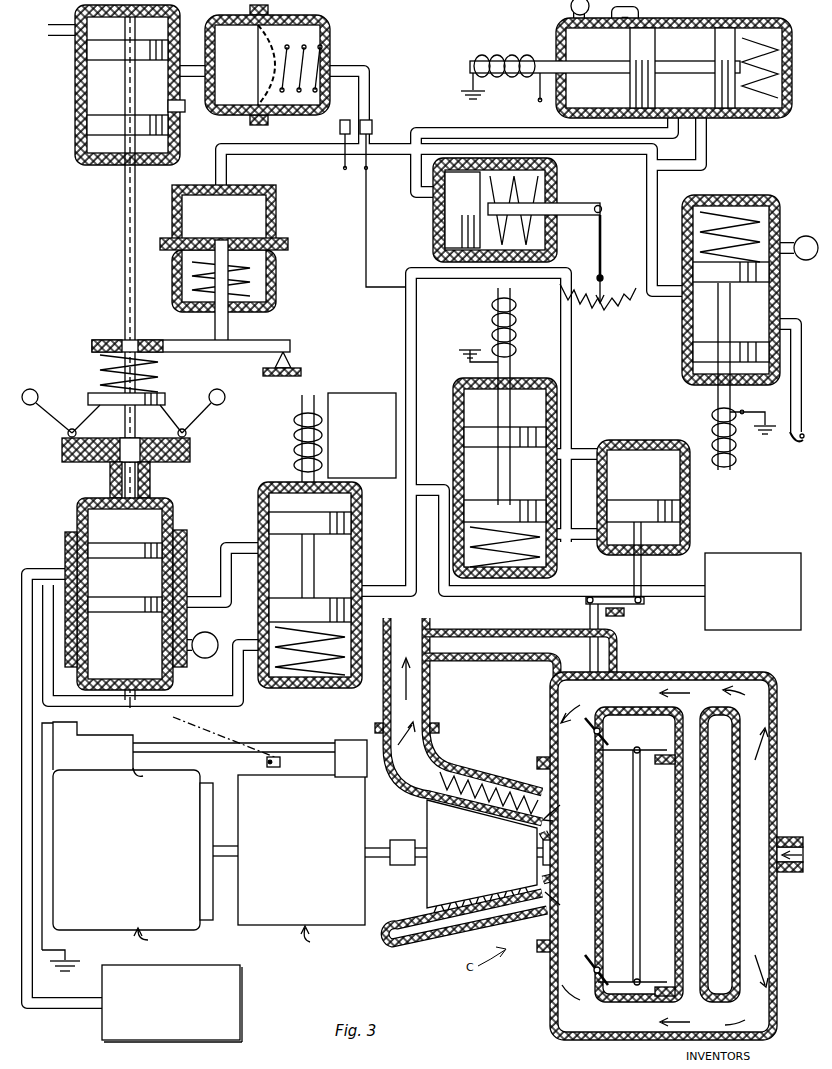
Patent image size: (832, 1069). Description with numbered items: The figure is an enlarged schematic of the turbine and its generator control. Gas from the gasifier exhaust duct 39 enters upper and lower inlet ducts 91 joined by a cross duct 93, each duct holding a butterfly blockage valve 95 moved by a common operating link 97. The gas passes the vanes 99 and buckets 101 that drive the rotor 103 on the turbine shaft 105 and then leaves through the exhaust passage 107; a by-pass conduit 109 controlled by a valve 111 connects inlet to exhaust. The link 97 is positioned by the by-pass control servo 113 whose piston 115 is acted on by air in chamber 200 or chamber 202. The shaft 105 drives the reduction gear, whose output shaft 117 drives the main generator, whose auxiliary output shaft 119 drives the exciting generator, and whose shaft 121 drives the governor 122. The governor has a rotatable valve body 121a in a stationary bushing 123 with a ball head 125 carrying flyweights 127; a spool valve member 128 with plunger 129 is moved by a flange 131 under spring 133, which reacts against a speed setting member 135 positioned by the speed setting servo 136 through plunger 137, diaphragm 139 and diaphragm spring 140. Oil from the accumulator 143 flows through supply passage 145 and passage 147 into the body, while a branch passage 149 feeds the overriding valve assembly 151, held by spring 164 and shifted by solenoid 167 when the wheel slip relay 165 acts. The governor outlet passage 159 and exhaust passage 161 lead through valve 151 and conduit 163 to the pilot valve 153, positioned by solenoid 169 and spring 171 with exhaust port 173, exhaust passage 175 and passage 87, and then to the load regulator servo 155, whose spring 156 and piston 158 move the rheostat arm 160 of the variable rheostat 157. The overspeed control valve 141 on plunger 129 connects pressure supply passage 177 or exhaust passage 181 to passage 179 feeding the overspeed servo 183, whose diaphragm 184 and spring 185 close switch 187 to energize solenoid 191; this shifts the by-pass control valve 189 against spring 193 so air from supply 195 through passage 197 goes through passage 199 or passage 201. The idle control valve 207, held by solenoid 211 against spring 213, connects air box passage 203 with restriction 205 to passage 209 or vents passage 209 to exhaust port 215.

The gasifier exhaust duct 39 is at (790, 868).
The passage 87 is at (629, 30).
The inlet ducts 91 is at (695, 688).
The cross duct 93 is at (581, 841).
The blockage valves 95 is at (575, 728).
The operating link 97 is at (638, 832).
The vanes 99 is at (500, 780).
The buckets 101 is at (470, 806).
The rotor 103 is at (440, 880).
The turbine shaft 105 is at (380, 840).
The exhaust passage 107 is at (416, 704).
The by-pass conduit 109 is at (535, 645).
The by-pass valve 111 is at (594, 680).
The by-pass control servo 113 is at (686, 514).
The piston 115 is at (650, 500).
The output shaft 117 is at (228, 852).
The auxiliary output shaft 119 is at (205, 752).
The governor drive shaft 121 is at (138, 690).
The valve body 121a is at (70, 512).
The turbine governor 122 is at (182, 510).
The bushing 123 is at (186, 545).
The ball head 125 is at (192, 458).
The centrifugal flyweights 127 is at (196, 428).
The spool valve member 128 is at (130, 572).
The operating plunger 129 is at (124, 295).
The flange 131 is at (166, 394).
The spring 133 is at (98, 368).
The speed setting member 135 is at (140, 340).
The speed setting servo 136 is at (278, 278).
The plunger 137 is at (230, 334).
The diaphragm 139 is at (262, 222).
The speed setting diaphragm spring 140 is at (278, 240).
The overspeed control valve assembly 141 is at (72, 128).
The accumulator 143 is at (228, 1036).
The governor supply passage 145 is at (46, 1008).
The passage 147 is at (32, 566).
The branch passage 149 is at (243, 700).
The overriding valve assembly 151 is at (280, 494).
The pilot valve 153 is at (730, 117).
The load regulator servo 155 is at (562, 188).
The load regulator servo spring 156 is at (490, 170).
The variable rheostat 157 is at (622, 310).
The load regulator servo piston 158 is at (458, 216).
The governor outlet passage 159 is at (222, 604).
The rheostat movable arm 160 is at (620, 259).
The exhaust passage 161 is at (194, 640).
The conduit 163 is at (680, 172).
The spring 164 is at (322, 680).
The relay 165 is at (336, 392).
The solenoid 167 is at (678, 132).
The solenoid 169 is at (503, 60).
The spring 171 is at (780, 108).
The exhaust port 173 is at (790, 58).
The exhaust passage 175 is at (570, 8).
The pressure supply passage 177 is at (183, 110).
The overspeed switch servo supply passage 179 is at (212, 60).
The exhaust passage 181 is at (60, 35).
The overspeed servo 183 is at (332, 30).
The diaphragm 184 is at (272, 68).
The spring 185 is at (324, 50).
The switch 187 is at (372, 108).
The turbine by-pass control valve 189 is at (556, 405).
The solenoid 191 is at (496, 328).
The spring 193 is at (545, 560).
The air supply 195 is at (778, 553).
The air supply passage 197 is at (436, 552).
The passage 199 is at (578, 444).
The chamber 200 is at (668, 478).
The passage 201 is at (596, 540).
The chamber 202 is at (662, 538).
The passage 203 is at (788, 455).
The restriction 205 is at (792, 430).
The idle control valve 207 is at (680, 348).
The passage 209 is at (270, 153).
The solenoid 211 is at (716, 422).
The spring 213 is at (752, 210).
The exhaust port 215 is at (800, 236).